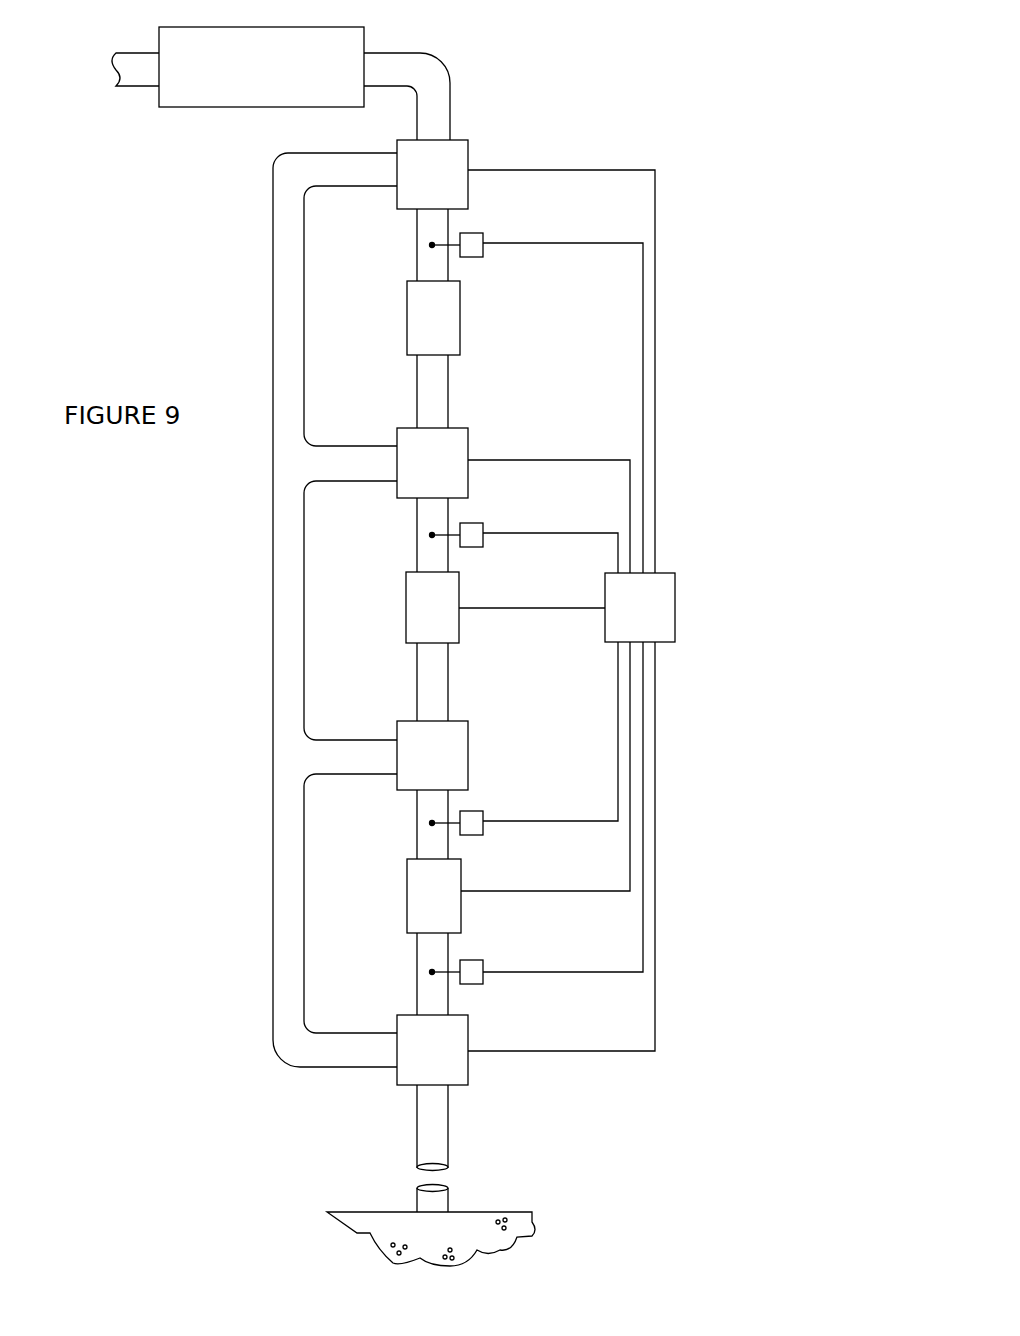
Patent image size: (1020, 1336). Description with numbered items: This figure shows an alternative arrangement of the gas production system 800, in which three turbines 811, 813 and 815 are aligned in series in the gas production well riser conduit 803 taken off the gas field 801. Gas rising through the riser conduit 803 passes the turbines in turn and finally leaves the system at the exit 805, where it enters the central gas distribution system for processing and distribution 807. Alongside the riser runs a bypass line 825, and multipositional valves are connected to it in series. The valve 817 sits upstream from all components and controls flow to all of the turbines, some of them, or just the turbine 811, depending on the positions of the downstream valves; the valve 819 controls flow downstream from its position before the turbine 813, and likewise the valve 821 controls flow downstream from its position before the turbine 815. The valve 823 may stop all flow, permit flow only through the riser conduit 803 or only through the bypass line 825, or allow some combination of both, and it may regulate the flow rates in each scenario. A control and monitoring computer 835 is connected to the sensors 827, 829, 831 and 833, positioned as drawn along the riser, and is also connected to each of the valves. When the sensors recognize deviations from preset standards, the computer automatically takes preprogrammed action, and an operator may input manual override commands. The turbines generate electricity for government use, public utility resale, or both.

The gas production system 800 is at (233, 724).
The gas field 801 is at (360, 1212).
The gas production well riser conduit 803 is at (445, 1117).
The exit 805 is at (388, 50).
The processing and/or distribution 807 is at (195, 107).
The turbine 811 is at (462, 916).
The turbine 813 is at (460, 628).
The turbine 815 is at (462, 338).
The valve 817 is at (405, 1087).
The valve 819 is at (405, 792).
The valve 821 is at (405, 500).
The valve 823 is at (405, 210).
The bypass line 825 is at (276, 616).
The sensor 827 is at (485, 986).
The sensor 829 is at (485, 815).
The sensor 831 is at (485, 530).
The sensor 833 is at (485, 252).
The control and monitoring computer 835 is at (672, 573).